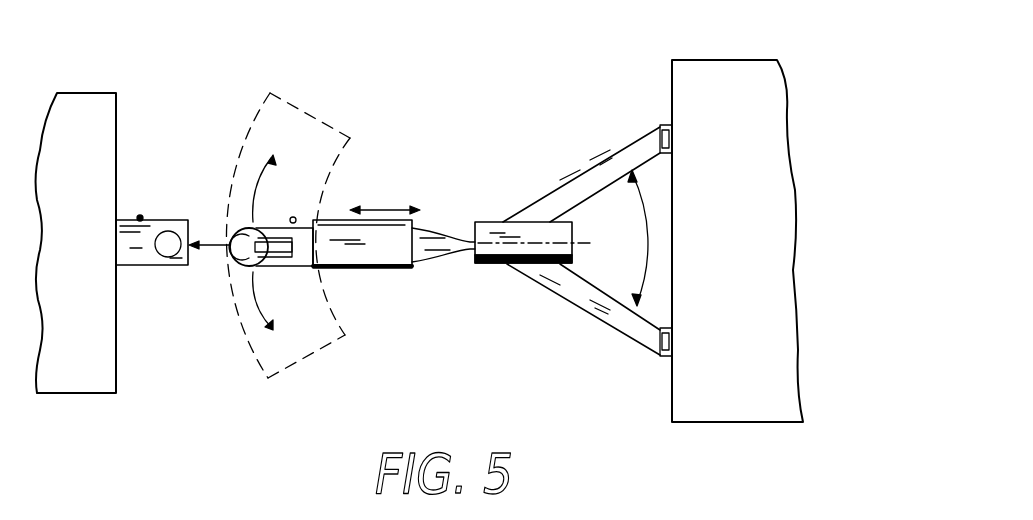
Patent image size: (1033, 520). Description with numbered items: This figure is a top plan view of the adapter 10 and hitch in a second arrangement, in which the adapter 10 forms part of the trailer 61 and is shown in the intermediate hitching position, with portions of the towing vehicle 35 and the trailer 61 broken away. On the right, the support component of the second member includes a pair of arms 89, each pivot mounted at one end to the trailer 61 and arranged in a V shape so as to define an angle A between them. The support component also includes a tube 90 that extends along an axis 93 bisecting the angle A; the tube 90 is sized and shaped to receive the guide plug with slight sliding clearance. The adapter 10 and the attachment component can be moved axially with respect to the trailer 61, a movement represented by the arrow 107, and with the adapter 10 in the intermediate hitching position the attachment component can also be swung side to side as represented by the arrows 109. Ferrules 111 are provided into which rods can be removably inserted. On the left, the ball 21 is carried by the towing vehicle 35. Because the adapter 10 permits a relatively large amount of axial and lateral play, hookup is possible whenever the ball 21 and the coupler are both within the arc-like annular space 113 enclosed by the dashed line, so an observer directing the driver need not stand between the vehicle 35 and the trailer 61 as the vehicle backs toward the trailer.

The adapter 10 is at (397, 300).
The ball 21 is at (163, 232).
The towing vehicle 35 is at (88, 97).
The trailer 61 is at (705, 68).
The arms 89 is at (572, 178).
The tube 90 is at (487, 265).
The axis 93 is at (512, 242).
The arrow 107 is at (380, 212).
The arrows 109 is at (262, 190).
The ferrules 111 is at (140, 214).
The space 113 is at (297, 358).
The angle A is at (627, 238).